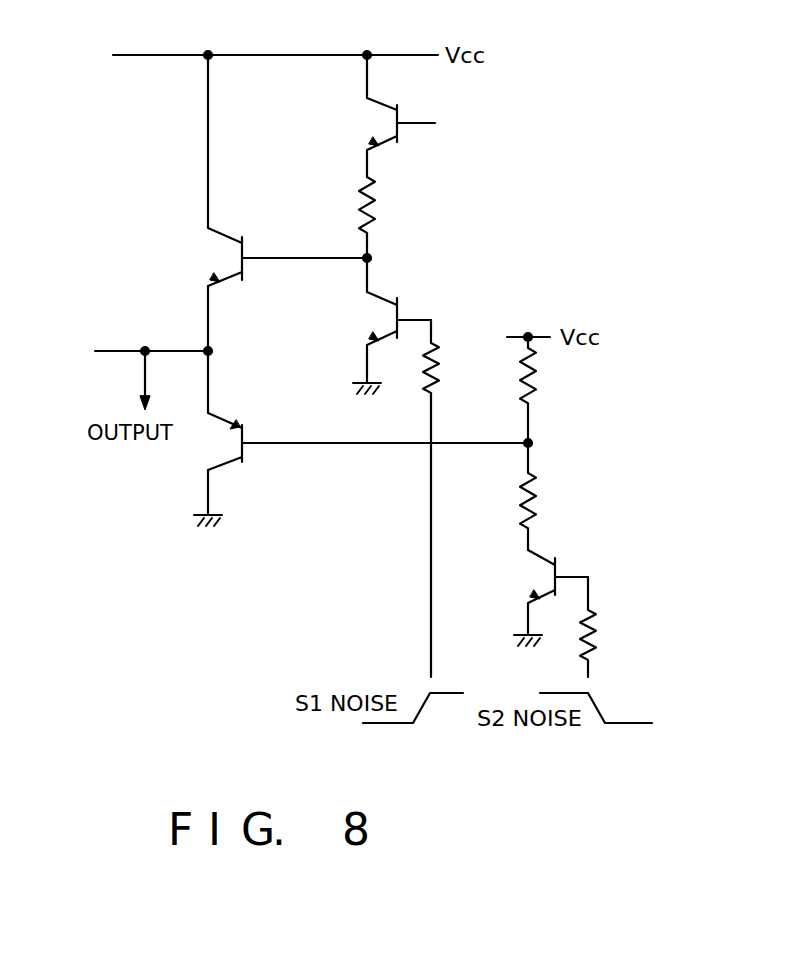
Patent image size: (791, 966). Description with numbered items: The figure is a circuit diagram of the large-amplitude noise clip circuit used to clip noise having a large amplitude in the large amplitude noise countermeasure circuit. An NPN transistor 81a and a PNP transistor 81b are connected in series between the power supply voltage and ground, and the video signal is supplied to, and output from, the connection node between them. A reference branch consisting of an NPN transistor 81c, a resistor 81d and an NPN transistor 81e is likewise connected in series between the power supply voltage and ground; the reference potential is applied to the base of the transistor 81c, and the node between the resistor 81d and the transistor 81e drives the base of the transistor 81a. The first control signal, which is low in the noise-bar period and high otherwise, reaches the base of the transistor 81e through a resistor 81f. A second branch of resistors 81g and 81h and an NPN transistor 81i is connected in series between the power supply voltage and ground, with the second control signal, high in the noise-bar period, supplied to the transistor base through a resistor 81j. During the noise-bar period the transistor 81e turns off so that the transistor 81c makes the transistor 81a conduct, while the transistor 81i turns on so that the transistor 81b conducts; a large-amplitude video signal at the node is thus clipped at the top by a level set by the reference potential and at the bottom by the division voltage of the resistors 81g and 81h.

The NPN transistor 81a is at (233, 232).
The PNP transistor 81b is at (218, 412).
The NPN transistor 81c is at (375, 108).
The resistor 81d is at (384, 206).
The NPN transistor 81e is at (386, 292).
The resistor 81f is at (421, 387).
The resistor 81g is at (537, 398).
The resistor 81h is at (545, 491).
The NPN transistor 81i is at (540, 578).
The resistor 81j is at (600, 635).